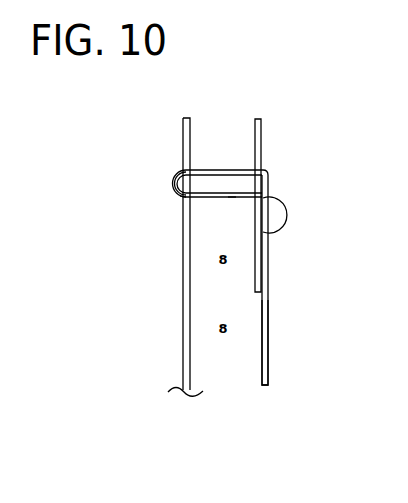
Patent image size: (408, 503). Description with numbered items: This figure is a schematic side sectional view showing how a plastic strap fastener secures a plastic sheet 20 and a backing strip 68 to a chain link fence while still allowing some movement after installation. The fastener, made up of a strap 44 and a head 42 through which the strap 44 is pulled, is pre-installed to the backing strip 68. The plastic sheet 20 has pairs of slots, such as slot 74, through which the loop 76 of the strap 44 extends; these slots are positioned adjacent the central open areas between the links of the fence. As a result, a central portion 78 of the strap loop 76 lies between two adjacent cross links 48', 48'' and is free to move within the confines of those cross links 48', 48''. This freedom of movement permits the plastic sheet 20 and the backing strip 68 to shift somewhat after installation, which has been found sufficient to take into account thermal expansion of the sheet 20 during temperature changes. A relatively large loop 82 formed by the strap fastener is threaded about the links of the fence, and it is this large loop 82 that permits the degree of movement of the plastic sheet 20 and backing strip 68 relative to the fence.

The plastic sheet 20 is at (182, 333).
The backing strip 68 is at (260, 143).
The large loop 82 is at (221, 170).
The strap 44 is at (268, 332).
The loop 76 is at (178, 197).
The slot 74 is at (180, 199).
The head 42 is at (287, 213).
The central portion 78 is at (232, 198).
The cross link 48' is at (235, 75).
The cross link 48'' is at (168, 238).